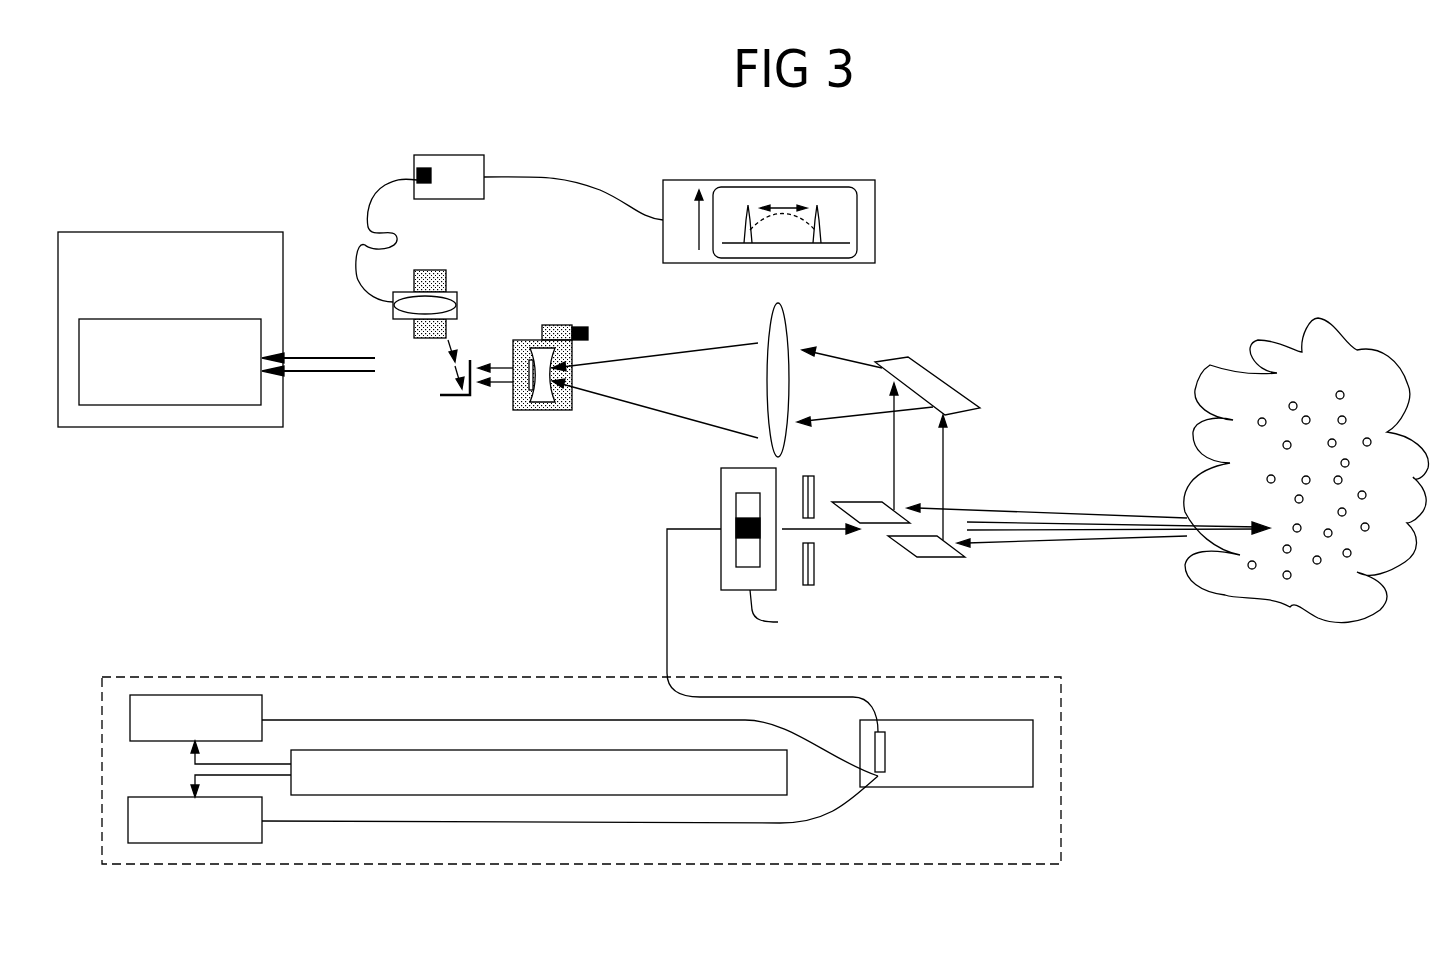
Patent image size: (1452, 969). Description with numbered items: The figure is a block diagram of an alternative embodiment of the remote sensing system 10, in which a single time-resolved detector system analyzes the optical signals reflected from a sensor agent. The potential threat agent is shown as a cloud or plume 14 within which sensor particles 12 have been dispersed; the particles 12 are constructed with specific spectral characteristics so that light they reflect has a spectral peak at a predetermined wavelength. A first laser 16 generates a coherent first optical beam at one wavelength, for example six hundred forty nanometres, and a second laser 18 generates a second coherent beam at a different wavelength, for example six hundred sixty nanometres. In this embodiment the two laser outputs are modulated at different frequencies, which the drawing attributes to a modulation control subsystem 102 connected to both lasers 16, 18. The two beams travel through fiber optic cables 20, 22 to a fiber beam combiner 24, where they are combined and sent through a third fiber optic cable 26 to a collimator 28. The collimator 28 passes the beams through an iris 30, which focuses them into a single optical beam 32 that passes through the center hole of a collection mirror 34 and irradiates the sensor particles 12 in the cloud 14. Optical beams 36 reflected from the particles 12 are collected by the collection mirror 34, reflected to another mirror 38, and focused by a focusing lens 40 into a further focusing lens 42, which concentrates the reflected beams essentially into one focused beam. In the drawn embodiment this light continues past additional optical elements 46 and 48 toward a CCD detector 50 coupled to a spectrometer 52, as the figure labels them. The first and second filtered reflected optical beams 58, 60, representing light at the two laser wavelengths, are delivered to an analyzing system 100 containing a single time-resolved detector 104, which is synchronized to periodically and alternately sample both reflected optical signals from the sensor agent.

The system 10 is at (1020, 242).
The sensor particles 12 is at (1269, 476).
The cloud or plume 14 is at (1198, 358).
The first laser 16 is at (262, 709).
The second laser 18 is at (262, 830).
The fiber optic cable 20 is at (418, 720).
The fiber optic cable 22 is at (418, 821).
The fiber beam combiner 24 is at (885, 772).
The third fiber optic cable 26 is at (667, 627).
The collimator 28 is at (732, 498).
The iris 30 is at (812, 563).
The single optical beam 32 is at (850, 532).
The collection mirror 34 is at (947, 557).
The reflected optical beams 36 is at (1028, 512).
The mirror 38 is at (958, 387).
The focusing lens 40 is at (787, 323).
The focusing lens 42 is at (575, 350).
The mirror 46 is at (466, 362).
The fiber coupling lens 48 is at (431, 340).
The CCD detector 50 is at (417, 175).
The spectrometer 52 is at (875, 222).
The first reflected optical beam 58 is at (273, 357).
The second reflected optical beam 60 is at (273, 373).
The analyzing system 100 is at (170, 232).
The modulation control subsystem 102 is at (717, 795).
The single time resolved detector 104 is at (167, 405).